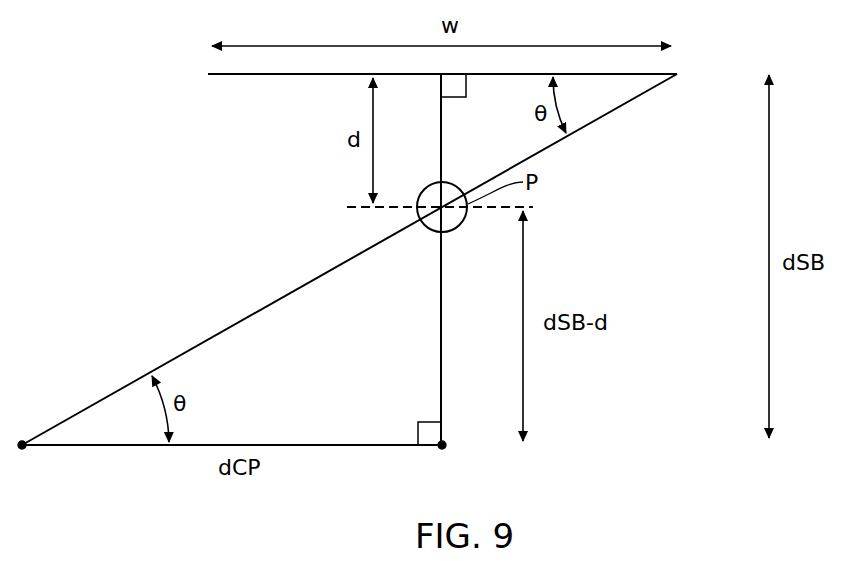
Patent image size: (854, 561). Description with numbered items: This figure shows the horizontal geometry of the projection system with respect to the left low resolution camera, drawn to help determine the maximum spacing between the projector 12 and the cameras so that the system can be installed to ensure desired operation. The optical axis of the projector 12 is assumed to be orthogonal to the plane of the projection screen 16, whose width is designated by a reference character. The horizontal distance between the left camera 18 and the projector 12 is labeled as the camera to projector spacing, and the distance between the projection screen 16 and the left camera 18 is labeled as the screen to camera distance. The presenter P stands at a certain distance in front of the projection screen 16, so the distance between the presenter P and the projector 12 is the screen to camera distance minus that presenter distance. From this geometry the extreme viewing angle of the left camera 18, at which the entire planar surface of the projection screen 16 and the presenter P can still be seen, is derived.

The projector 12 is at (445, 443).
The projection screen 16 is at (290, 75).
The left camera 18 is at (25, 441).